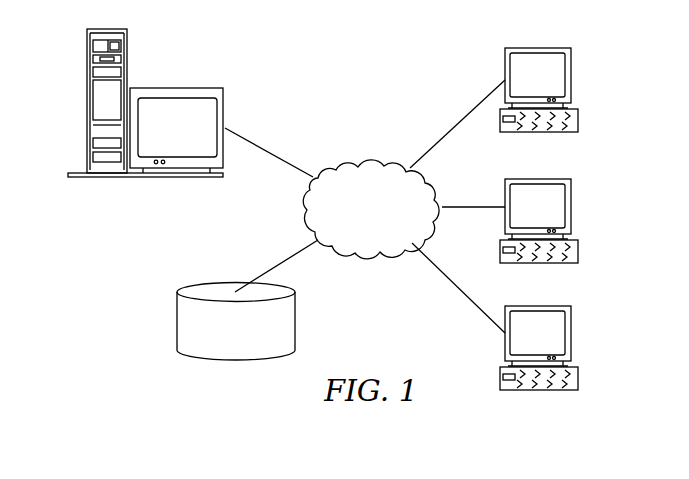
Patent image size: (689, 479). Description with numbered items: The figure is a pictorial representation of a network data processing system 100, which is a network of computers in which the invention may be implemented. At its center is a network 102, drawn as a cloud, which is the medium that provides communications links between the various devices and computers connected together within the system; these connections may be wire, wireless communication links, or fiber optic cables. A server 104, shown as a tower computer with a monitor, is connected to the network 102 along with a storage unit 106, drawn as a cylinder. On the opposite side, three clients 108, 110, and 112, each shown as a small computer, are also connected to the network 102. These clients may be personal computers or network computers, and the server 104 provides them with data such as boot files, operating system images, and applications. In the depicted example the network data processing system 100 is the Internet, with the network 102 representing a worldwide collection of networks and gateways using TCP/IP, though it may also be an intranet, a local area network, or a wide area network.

The network data processing system 100 is at (421, 56).
The network 102 is at (345, 163).
The server 104 is at (87, 103).
The storage unit 106 is at (177, 321).
The client 108 is at (572, 75).
The client 110 is at (572, 206).
The client 112 is at (572, 335).